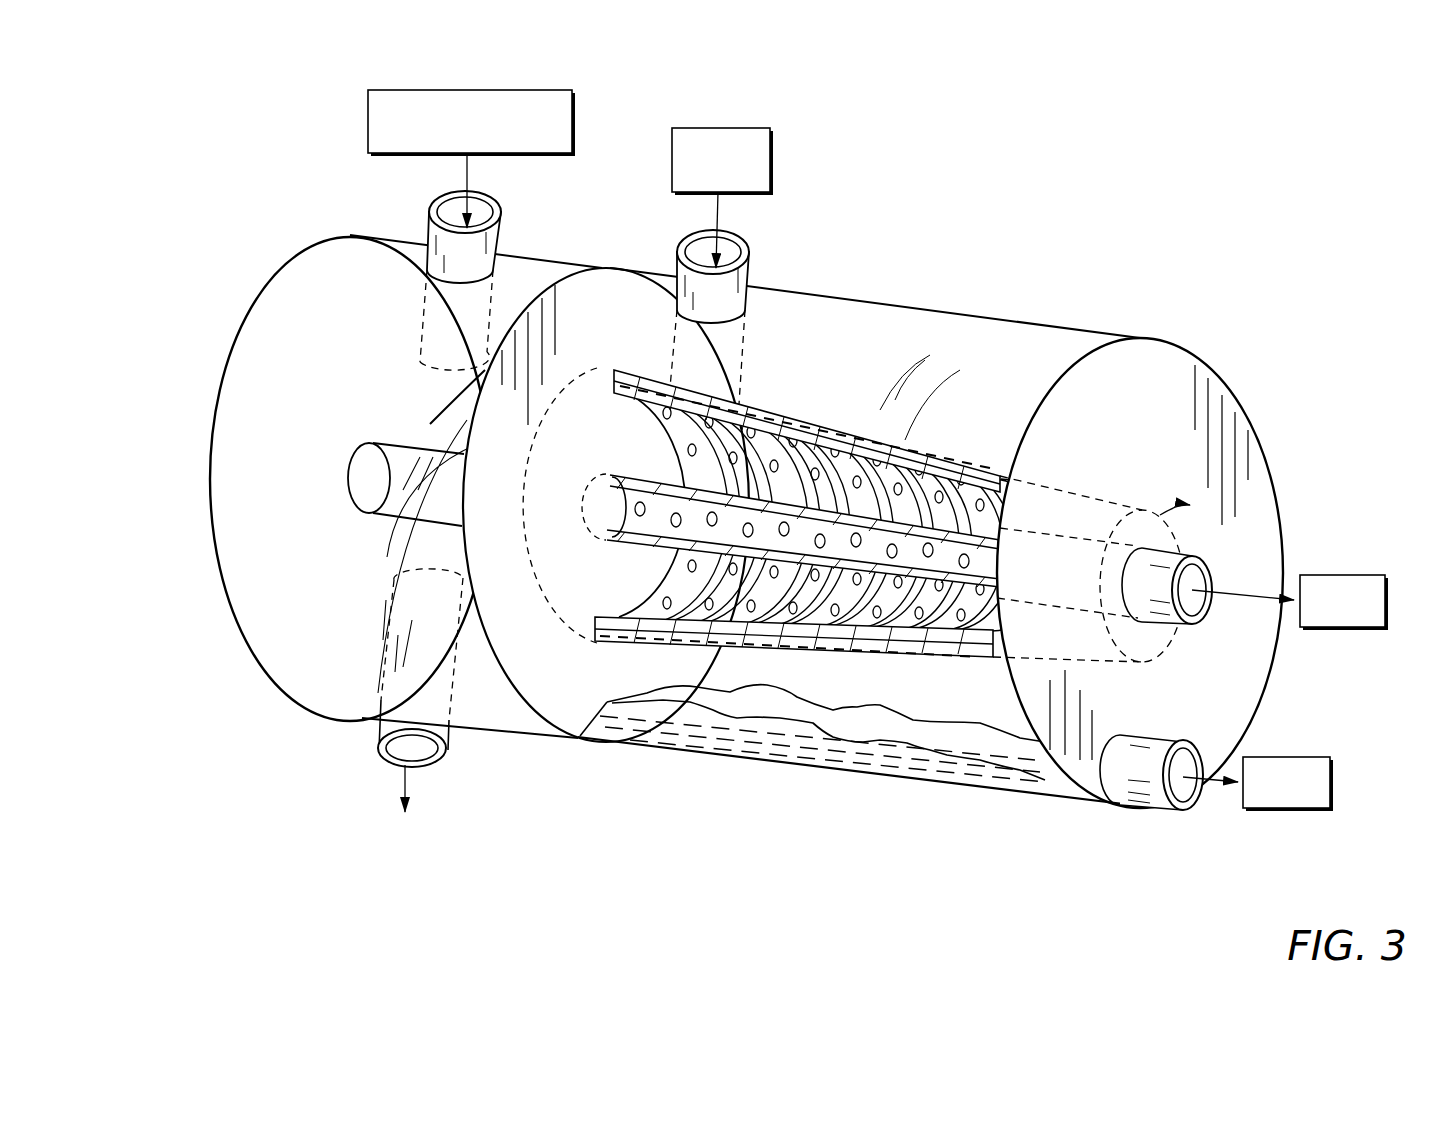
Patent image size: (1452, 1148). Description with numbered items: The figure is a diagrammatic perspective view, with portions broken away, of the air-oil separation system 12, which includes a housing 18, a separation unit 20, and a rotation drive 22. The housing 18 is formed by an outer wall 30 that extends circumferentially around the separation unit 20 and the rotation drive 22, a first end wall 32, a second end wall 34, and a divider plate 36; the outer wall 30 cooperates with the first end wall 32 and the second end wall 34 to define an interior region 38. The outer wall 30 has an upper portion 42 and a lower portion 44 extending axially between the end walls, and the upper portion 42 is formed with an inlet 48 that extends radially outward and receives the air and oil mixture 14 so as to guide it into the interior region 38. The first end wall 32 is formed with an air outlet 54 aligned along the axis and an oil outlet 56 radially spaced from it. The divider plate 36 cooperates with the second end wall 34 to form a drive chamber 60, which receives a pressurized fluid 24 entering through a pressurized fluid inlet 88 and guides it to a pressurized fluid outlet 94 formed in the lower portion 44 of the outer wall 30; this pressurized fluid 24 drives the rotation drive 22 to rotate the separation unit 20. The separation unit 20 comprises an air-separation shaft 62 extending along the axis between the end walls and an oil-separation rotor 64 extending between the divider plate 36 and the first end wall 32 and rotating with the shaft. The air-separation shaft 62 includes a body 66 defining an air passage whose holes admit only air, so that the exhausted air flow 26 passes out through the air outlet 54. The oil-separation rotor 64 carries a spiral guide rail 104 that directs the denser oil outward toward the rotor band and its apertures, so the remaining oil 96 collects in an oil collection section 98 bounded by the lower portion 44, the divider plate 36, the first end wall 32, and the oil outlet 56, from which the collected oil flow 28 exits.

The air-oil separation system 12 is at (771, 453).
The air and oil mixture 14 is at (727, 128).
The housing 18 is at (822, 515).
The separation unit 20 is at (799, 393).
The rotation drive 22 is at (495, 700).
The pressurized fluid 24 is at (435, 89).
The exhausted air flow 26 is at (1330, 575).
The collected oil flow 28 is at (1278, 758).
The outer wall 30 is at (941, 524).
The first end wall 32 is at (1228, 436).
The second end wall 34 is at (226, 582).
The divider plate 36 is at (540, 265).
The interior region 38 is at (1039, 360).
The upper portion 42 is at (838, 295).
The lower portion 44 is at (708, 752).
The inlet 48 is at (730, 250).
The air outlet 54 is at (1192, 577).
The oil outlet 56 is at (1185, 762).
The drive chamber 60 is at (518, 243).
The air-separation shaft 62 is at (828, 575).
The oil-separation rotor 64 is at (857, 662).
The body 66 is at (940, 525).
The pressurized fluid inlet 88 is at (450, 212).
The pressurized fluid outlet 94 is at (404, 758).
The remaining oil 96 is at (905, 760).
The oil collection section 98 is at (1007, 713).
The spiral guide rail 104 is at (907, 488).